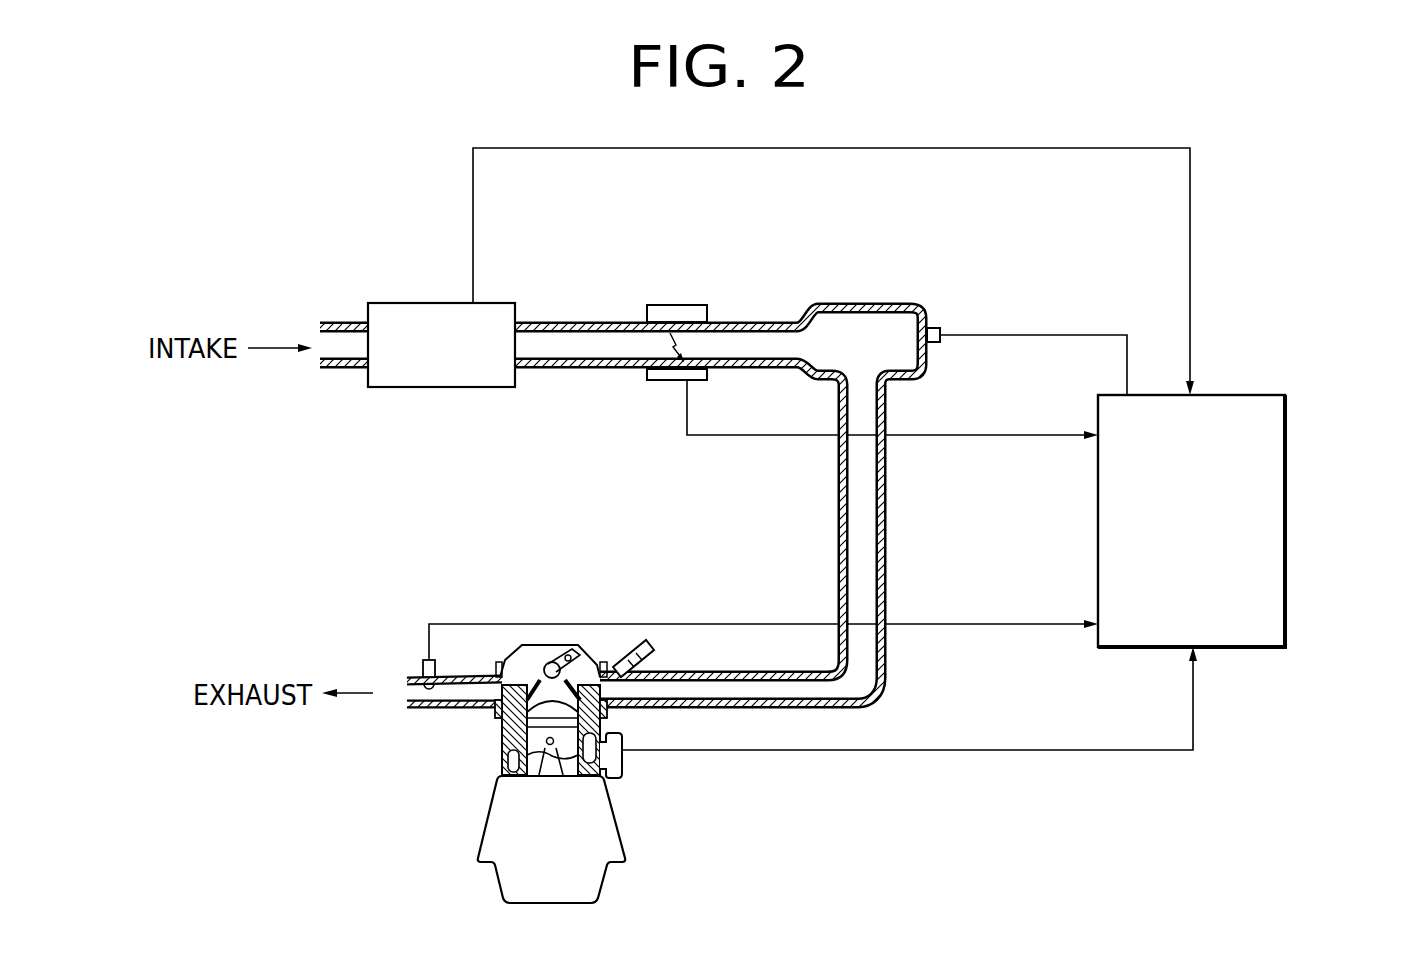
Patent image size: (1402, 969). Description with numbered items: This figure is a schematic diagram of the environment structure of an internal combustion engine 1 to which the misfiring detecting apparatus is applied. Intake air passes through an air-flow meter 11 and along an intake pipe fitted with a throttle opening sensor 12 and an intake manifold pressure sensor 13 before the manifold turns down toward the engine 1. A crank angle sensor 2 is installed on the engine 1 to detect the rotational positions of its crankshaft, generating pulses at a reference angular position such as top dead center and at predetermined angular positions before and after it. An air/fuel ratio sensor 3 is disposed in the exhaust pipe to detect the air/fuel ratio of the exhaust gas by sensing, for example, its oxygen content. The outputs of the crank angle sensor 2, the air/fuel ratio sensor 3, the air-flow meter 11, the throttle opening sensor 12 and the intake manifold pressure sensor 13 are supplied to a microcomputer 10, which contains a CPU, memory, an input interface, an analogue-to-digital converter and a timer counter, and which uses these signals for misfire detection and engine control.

The internal combustion engine 1 is at (610, 870).
The crank angle sensor 2 is at (622, 765).
The air/fuel ratio sensor 3 is at (425, 658).
The microcomputer 10 is at (1285, 512).
The air-flow meter 11 is at (443, 387).
The throttle opening sensor 12 is at (658, 380).
The intake manifold pressure sensor 13 is at (947, 322).